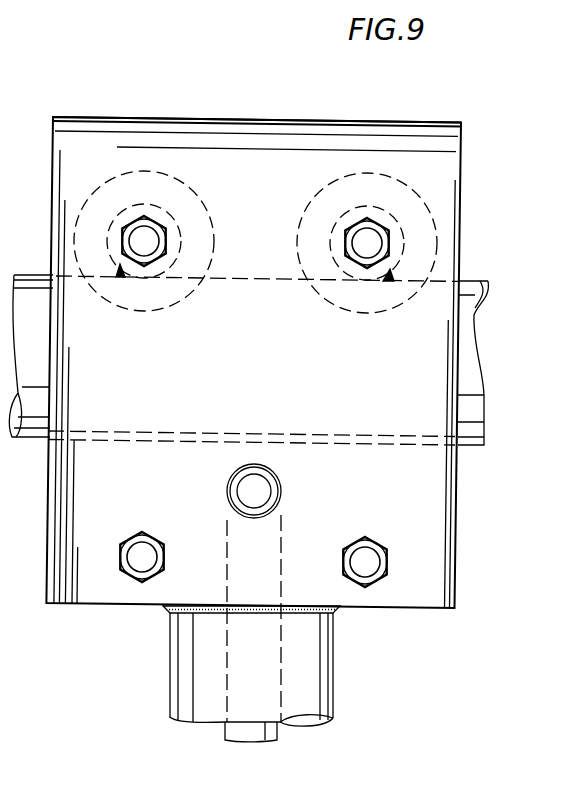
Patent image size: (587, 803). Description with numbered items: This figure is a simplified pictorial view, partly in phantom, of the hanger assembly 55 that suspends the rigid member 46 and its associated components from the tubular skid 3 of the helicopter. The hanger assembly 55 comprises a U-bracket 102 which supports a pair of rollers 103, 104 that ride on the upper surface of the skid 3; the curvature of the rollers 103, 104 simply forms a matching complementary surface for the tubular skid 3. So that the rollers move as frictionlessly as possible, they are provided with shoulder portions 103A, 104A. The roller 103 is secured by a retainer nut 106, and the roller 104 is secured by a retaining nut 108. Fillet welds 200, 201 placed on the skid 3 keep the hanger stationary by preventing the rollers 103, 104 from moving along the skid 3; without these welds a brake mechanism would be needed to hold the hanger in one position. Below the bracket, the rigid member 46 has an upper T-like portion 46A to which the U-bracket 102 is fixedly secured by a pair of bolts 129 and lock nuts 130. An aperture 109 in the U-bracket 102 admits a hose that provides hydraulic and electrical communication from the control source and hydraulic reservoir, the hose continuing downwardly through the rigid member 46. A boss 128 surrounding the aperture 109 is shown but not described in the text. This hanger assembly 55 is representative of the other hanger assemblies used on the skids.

The skid 3 is at (28, 275).
The rigid member 46 is at (170, 682).
The upper T-like portion 46A is at (126, 432).
The hanger assembly 55 is at (203, 96).
The U-bracket 102 is at (266, 118).
The roller 103 is at (192, 186).
The shoulder portion 103A is at (178, 222).
The roller 104 is at (328, 186).
The shoulder portion 104A is at (400, 203).
The retainer nut 106 is at (133, 268).
The retaining nut 108 is at (355, 268).
The aperture 109 is at (283, 481).
The boss 128 is at (250, 463).
The bolts 129 is at (139, 558).
The lock nuts 130 is at (133, 535).
The fillet weld 200 is at (391, 278).
The fillet weld 201 is at (118, 275).